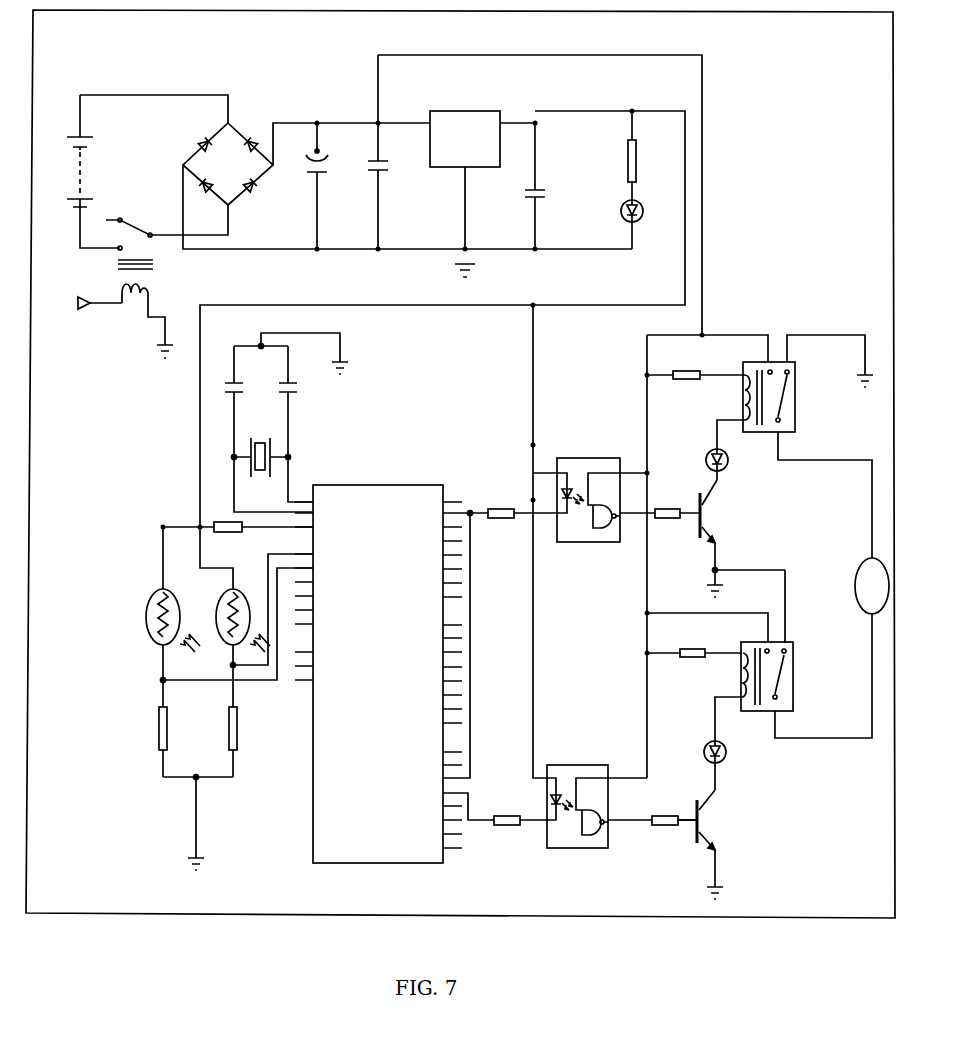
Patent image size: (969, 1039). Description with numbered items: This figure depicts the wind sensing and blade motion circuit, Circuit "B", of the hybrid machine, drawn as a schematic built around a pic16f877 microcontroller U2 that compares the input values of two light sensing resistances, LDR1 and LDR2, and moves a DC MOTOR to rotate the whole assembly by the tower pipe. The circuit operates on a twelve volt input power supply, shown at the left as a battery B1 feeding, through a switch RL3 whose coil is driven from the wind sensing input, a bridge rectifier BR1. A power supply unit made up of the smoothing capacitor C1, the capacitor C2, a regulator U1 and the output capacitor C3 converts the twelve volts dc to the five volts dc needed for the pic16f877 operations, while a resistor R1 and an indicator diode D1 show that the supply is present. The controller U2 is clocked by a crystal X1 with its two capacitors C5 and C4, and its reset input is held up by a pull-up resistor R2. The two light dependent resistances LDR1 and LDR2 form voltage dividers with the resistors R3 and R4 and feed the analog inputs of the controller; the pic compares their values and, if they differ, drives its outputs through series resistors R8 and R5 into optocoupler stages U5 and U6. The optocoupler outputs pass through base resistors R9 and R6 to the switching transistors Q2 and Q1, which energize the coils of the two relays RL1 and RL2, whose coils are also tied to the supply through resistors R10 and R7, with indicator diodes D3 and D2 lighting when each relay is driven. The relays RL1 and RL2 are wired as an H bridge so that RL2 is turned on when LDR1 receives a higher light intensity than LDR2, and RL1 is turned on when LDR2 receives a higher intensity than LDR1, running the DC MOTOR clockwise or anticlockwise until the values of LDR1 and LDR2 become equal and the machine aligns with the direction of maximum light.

The 12V battery B1 is at (93, 171).
The relay switch with coil driven by wind sensing circuit RL3 is at (131, 278).
The bridge rectifier BR1 is at (230, 166).
The 1000uF filter capacitor C1 is at (329, 186).
The 104pF capacitor C2 is at (389, 152).
The 7805 voltage regulator U1 is at (466, 132).
The 104p capacitor C3 is at (544, 186).
The 1k resistor R1 is at (642, 155).
The red LED power indicator D1 is at (648, 222).
The 33p oscillator capacitor C5 is at (269, 429).
The 33p oscillator capacitor C4 is at (298, 424).
The crystal X1 is at (261, 457).
The 10k MCLR pull-up resistor R2 is at (238, 526).
The PIC16F877 microcontroller U2 is at (378, 677).
The light dependent resistance LDR2 is at (210, 605).
The light dependent resistance LDR1 is at (264, 630).
The 10k resistor R4 is at (173, 728).
The 10k resistor R3 is at (243, 742).
The 1k resistor R8 is at (509, 635).
The 1k resistor R5 is at (504, 816).
The optocoupler NAND U5 is at (601, 499).
The optocoupler NAND U6 is at (597, 806).
The 1k resistor R10 is at (696, 374).
The 1k resistor R7 is at (694, 649).
The relay RL1 is at (794, 460).
The relay RL2 is at (793, 655).
The green LED D3 is at (737, 464).
The green LED D2 is at (734, 765).
The NPN transistor Q2 is at (732, 538).
The NPN transistor Q1 is at (707, 844).
The 4.7k resistor R9 is at (667, 512).
The 4.7k resistor R6 is at (674, 820).
The DC motor DC MOTOR is at (839, 586).